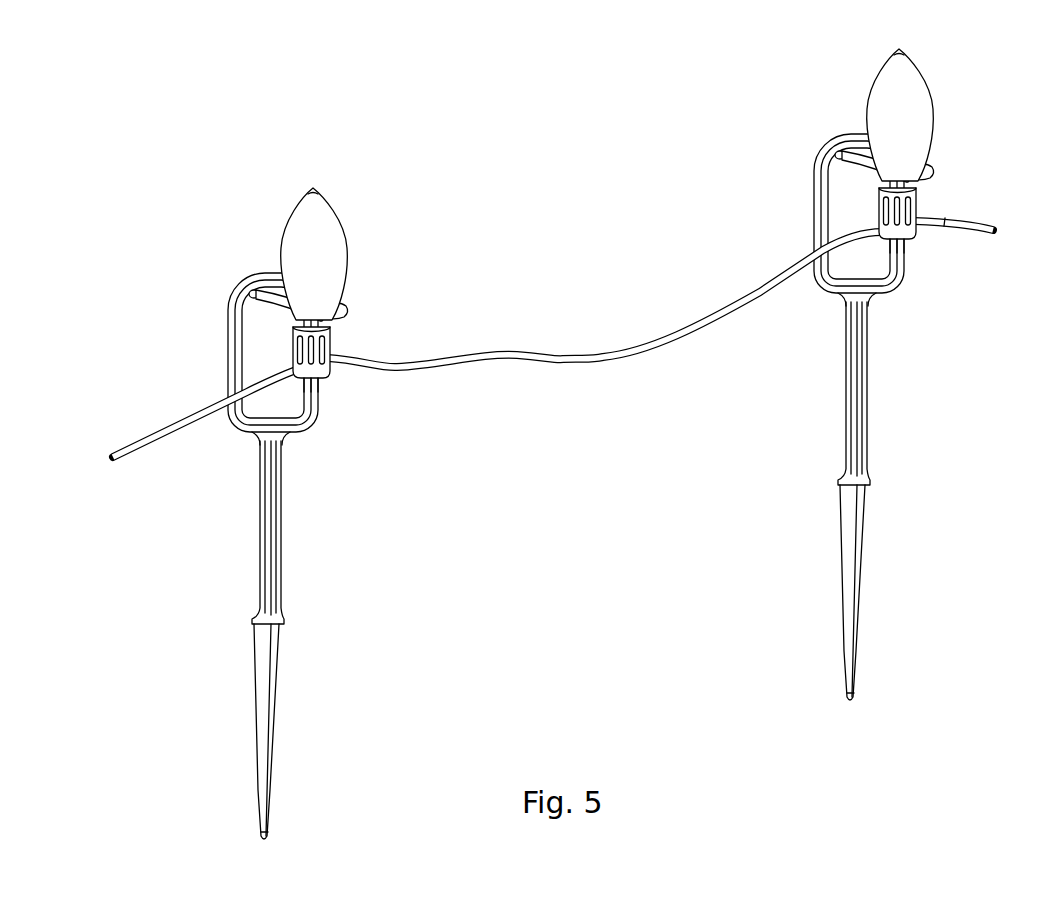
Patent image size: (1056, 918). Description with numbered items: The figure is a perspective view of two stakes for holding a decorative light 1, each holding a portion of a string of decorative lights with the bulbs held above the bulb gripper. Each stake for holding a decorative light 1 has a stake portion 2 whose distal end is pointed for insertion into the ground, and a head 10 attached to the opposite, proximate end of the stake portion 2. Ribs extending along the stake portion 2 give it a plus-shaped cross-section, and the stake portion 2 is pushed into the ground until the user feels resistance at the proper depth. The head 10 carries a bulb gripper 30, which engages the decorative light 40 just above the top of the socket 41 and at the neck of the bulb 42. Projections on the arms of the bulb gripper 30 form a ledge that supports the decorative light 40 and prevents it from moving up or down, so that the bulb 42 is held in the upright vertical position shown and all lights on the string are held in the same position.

The stake for holding a decorative light 1 is at (193, 372).
The stake portion 2 is at (237, 559).
The head 10 is at (237, 288).
The bulb gripper 30 is at (345, 306).
The decorative light 40 is at (287, 197).
The socket 41 is at (336, 337).
The bulb 42 is at (334, 220).